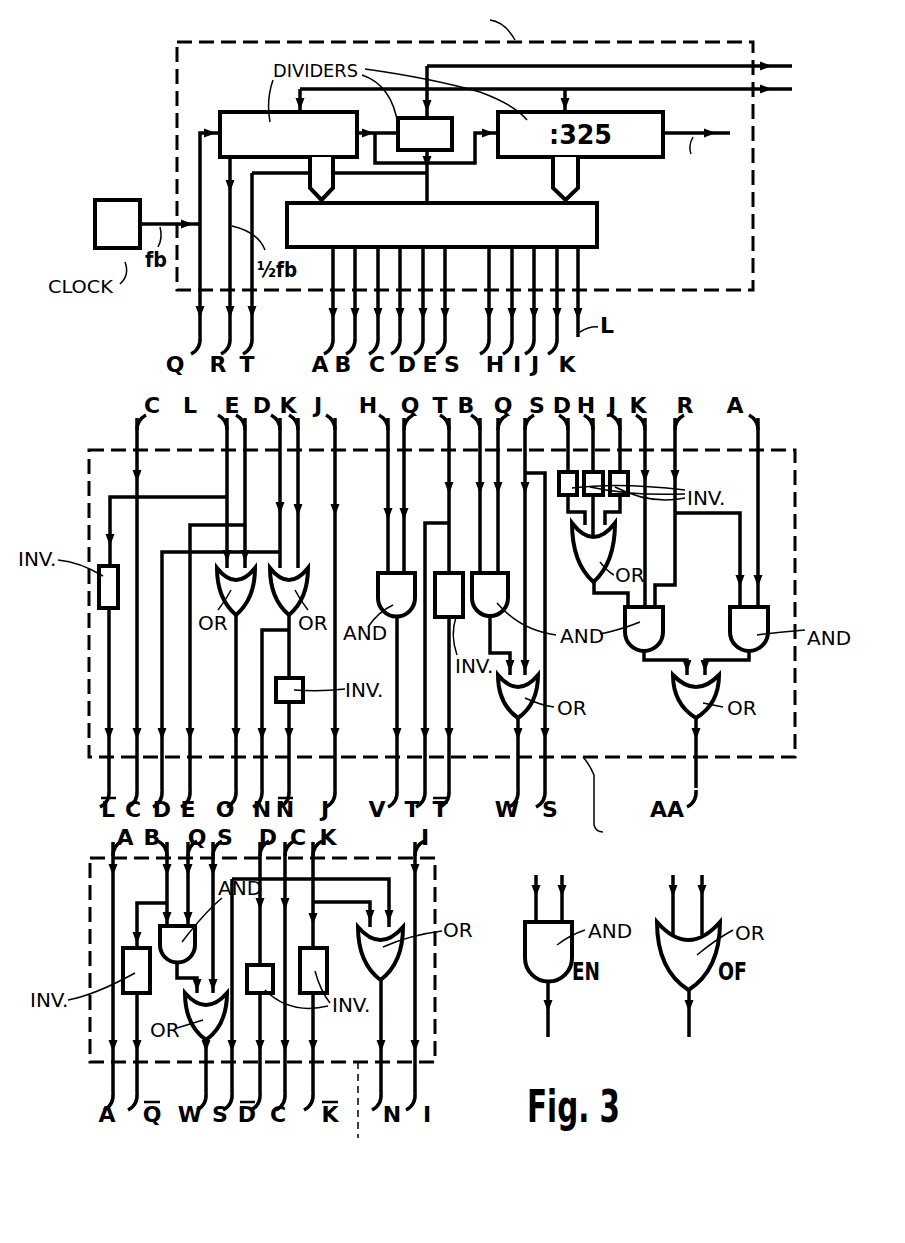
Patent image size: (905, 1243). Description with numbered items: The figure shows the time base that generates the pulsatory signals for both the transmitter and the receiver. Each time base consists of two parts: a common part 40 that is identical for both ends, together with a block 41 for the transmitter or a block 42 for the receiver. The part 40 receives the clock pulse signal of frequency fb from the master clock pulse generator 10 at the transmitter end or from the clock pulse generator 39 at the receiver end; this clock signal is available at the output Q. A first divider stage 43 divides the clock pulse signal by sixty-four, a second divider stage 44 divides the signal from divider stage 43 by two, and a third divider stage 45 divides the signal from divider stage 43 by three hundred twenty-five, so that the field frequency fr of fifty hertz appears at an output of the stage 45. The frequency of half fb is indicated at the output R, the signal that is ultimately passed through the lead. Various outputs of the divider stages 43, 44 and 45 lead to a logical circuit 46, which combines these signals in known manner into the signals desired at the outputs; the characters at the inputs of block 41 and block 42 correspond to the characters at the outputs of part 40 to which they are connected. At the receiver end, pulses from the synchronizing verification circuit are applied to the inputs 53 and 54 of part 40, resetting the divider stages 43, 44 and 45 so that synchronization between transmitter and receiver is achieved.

The master clock pulse generator 10 is at (123, 200).
The clock pulse generator 39 is at (124, 197).
The common time base part 40 is at (710, 292).
The transmitter time base block 41 is at (748, 757).
The receiver time base block 42 is at (436, 1028).
The first divider stage 43 is at (257, 111).
The second divider stage 44 is at (450, 136).
The third divider stage 45 is at (667, 128).
The logical circuit 46 is at (597, 231).
The reset input of block 40 53 is at (781, 91).
The reset input of block 40 54 is at (786, 66).